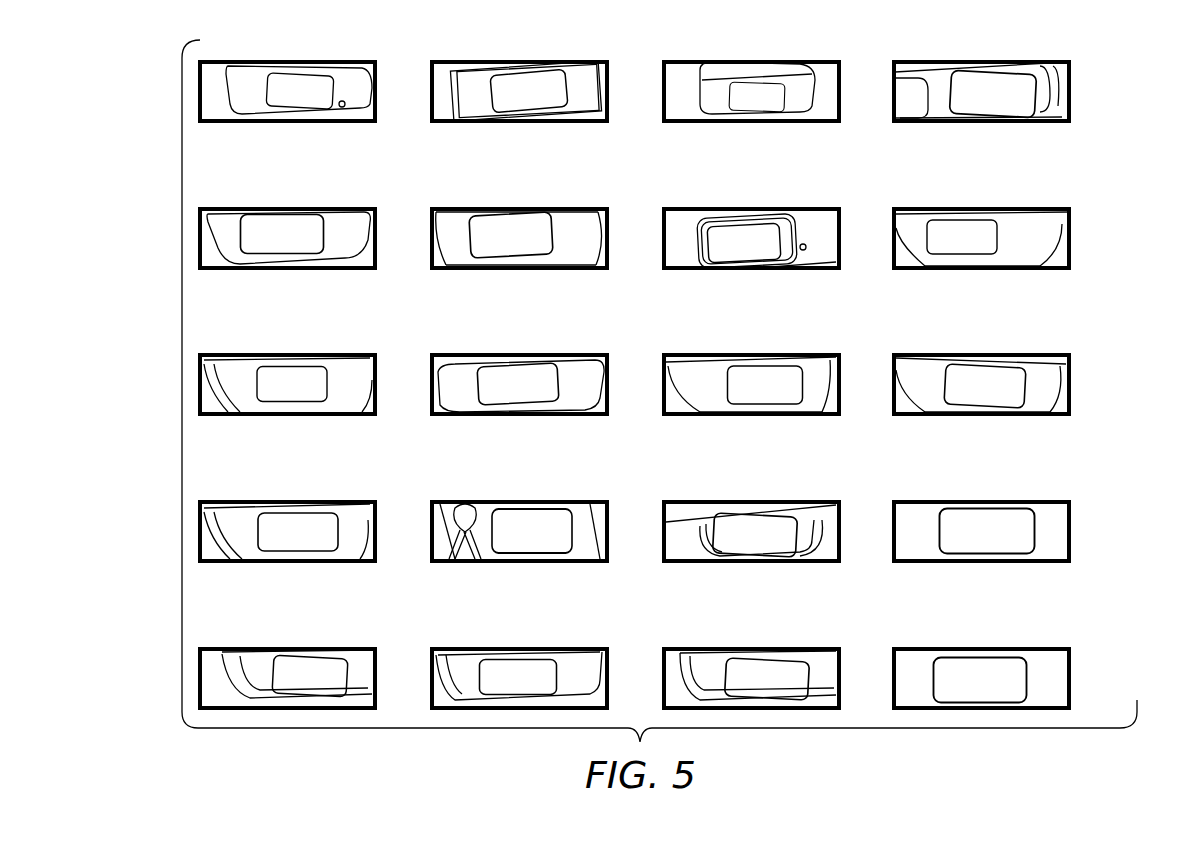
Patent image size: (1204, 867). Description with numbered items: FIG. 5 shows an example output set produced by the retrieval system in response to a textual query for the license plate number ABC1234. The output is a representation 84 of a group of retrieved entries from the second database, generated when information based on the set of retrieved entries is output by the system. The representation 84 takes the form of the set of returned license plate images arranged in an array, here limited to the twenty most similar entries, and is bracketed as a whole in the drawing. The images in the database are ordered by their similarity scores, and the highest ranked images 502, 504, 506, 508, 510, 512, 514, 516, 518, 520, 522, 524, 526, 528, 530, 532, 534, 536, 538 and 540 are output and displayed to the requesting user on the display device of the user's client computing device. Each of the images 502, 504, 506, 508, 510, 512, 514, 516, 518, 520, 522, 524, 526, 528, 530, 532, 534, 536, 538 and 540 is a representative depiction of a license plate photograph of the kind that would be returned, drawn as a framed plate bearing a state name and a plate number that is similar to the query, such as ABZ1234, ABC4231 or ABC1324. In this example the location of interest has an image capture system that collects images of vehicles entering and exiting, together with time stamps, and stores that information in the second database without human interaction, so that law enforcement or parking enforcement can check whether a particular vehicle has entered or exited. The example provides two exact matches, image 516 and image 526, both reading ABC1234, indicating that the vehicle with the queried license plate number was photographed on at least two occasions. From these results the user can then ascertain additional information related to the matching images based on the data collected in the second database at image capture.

The representation 84 is at (1108, 130).
The highest ranked image 502 is at (287, 60).
The highest ranked image 504 is at (527, 60).
The highest ranked image 506 is at (751, 60).
The highest ranked image 508 is at (982, 60).
The highest ranked image 510 is at (287, 207).
The highest ranked image 512 is at (527, 207).
The highest ranked image 514 is at (751, 207).
The highest ranked image 516 is at (982, 207).
The highest ranked image 518 is at (287, 353).
The highest ranked image 520 is at (527, 353).
The highest ranked image 522 is at (751, 353).
The highest ranked image 524 is at (982, 353).
The highest ranked image 526 is at (287, 500).
The highest ranked image 528 is at (527, 500).
The highest ranked image 530 is at (751, 500).
The highest ranked image 532 is at (982, 500).
The highest ranked image 534 is at (287, 647).
The highest ranked image 536 is at (527, 647).
The highest ranked image 538 is at (751, 647).
The highest ranked image 540 is at (982, 647).